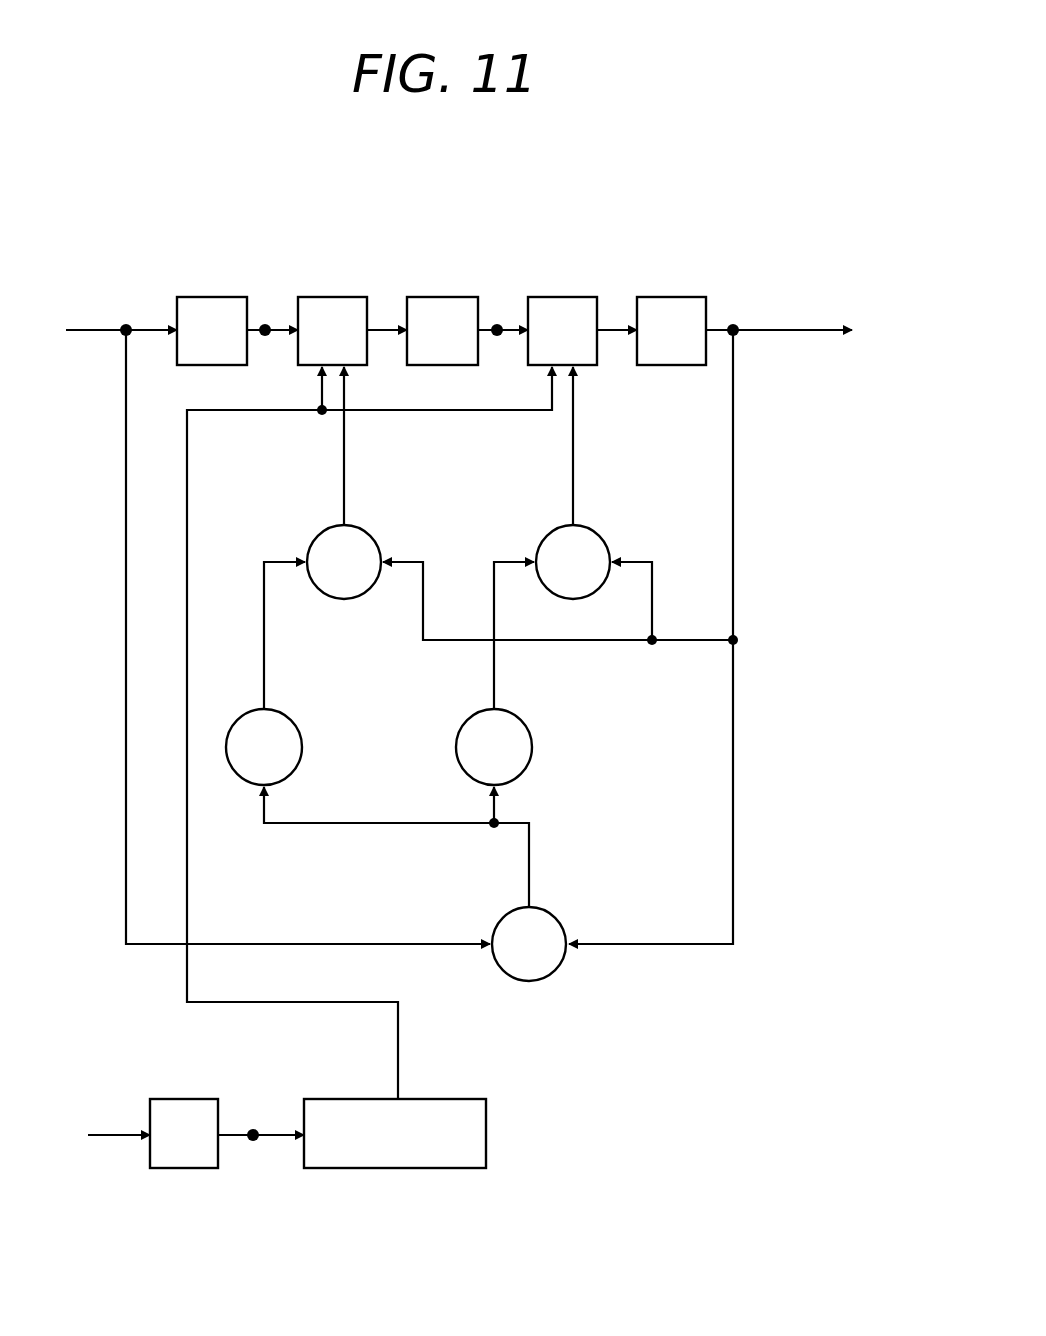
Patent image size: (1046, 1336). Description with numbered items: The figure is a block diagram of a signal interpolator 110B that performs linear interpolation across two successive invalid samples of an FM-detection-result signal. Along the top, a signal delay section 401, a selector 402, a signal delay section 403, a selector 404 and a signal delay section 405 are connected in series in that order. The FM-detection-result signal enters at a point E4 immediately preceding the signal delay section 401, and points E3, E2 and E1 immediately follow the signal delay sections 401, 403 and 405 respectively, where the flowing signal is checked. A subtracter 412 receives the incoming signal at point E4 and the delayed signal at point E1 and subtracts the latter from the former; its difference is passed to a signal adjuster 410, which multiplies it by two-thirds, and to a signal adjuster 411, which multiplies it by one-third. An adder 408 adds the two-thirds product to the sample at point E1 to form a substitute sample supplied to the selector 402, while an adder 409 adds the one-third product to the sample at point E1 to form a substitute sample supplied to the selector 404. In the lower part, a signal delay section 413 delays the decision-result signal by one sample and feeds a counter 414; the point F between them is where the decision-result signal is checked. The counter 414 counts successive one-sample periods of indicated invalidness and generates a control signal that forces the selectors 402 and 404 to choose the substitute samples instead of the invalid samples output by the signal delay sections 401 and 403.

The signal interpolator 110B is at (635, 200).
The signal delay section 401 is at (212, 297).
The selector 402 is at (333, 297).
The signal delay section 403 is at (443, 297).
The selector 404 is at (560, 297).
The signal delay section 405 is at (670, 297).
The adder 408 is at (370, 529).
The adder 409 is at (598, 529).
The signal adjuster 410 is at (299, 724).
The signal adjuster 411 is at (526, 724).
The subtracter 412 is at (552, 911).
The signal delay section 413 is at (185, 1099).
The counter 414 is at (452, 1099).
The checking point E1 is at (733, 325).
The checking point E2 is at (497, 325).
The checking point E3 is at (265, 325).
The checking point E4 is at (126, 325).
The checking point F is at (253, 1130).